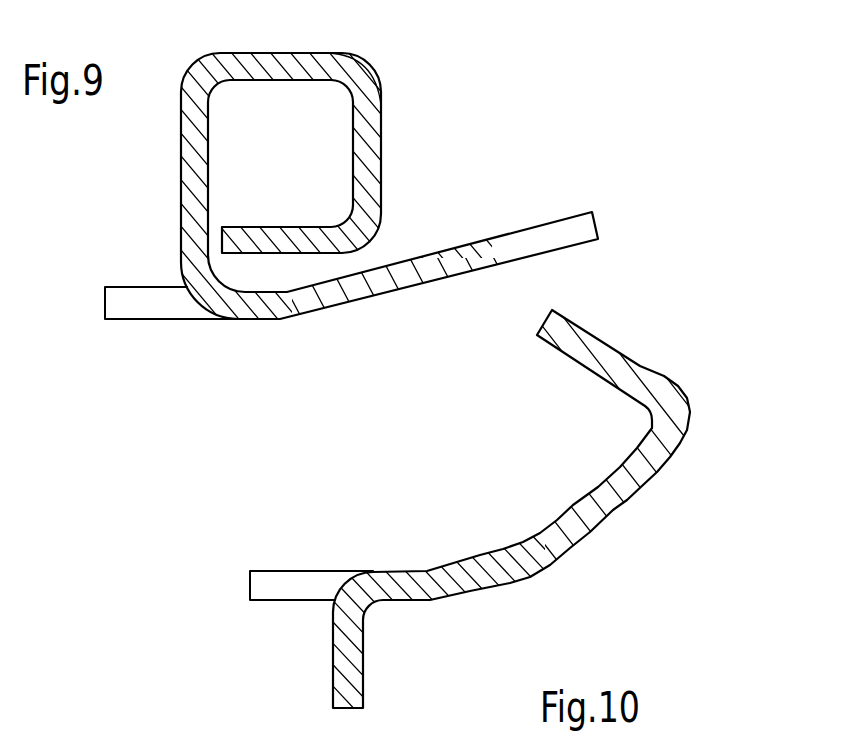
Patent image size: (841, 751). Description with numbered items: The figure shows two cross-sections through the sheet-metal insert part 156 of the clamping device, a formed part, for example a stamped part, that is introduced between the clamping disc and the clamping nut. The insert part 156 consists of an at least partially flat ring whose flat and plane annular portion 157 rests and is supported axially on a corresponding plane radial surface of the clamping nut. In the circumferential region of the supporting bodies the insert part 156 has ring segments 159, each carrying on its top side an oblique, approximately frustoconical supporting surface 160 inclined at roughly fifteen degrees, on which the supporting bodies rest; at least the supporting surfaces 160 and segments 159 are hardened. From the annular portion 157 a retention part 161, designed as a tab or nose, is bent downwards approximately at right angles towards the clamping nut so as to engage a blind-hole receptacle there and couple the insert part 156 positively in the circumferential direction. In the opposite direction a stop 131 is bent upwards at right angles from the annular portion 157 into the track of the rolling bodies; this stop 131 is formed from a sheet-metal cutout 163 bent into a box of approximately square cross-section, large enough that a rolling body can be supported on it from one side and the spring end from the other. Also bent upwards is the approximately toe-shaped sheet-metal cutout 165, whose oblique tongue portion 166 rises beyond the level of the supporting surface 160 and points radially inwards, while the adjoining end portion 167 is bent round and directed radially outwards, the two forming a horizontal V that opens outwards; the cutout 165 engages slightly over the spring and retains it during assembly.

In FIG. 9, the stop 131 is at (282, 130).
In FIG. 9, the insert part 156 is at (173, 240).
In FIG. 10, the insert part 156 is at (388, 567).
In FIG. 9, the flat plane annular portion 157 is at (158, 310).
In FIG. 10, the flat plane annular portion 157 is at (300, 582).
In FIG. 9, the segment 159 is at (522, 240).
In FIG. 9, the supporting surface 160 is at (452, 248).
In FIG. 10, the retention part 161 is at (340, 665).
In FIG. 9, the sheet-metal cutout 163 is at (263, 67).
In FIG. 10, the toe-shaped sheet-metal cutout 165 is at (614, 513).
In FIG. 10, the tongue portion 166 is at (580, 513).
In FIG. 10, the end portion 167 is at (608, 358).